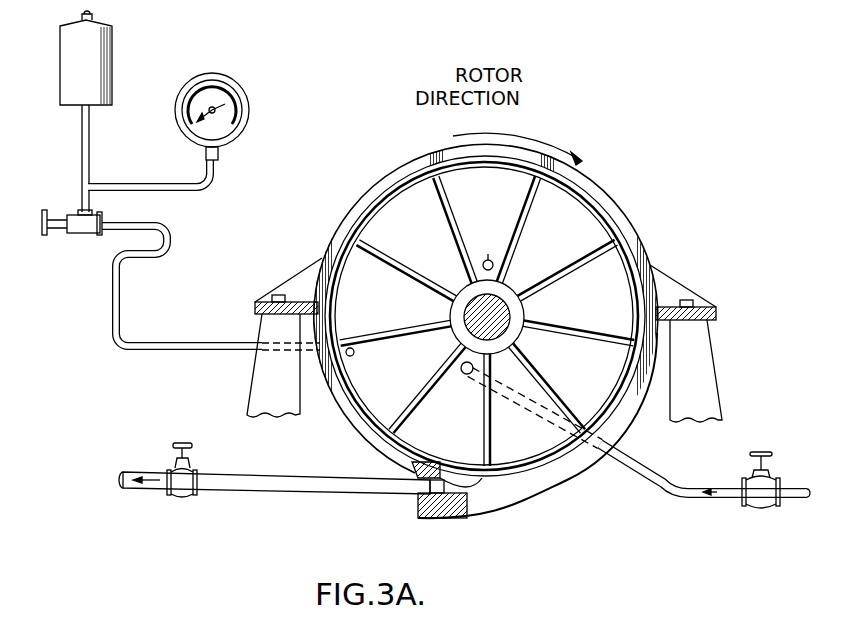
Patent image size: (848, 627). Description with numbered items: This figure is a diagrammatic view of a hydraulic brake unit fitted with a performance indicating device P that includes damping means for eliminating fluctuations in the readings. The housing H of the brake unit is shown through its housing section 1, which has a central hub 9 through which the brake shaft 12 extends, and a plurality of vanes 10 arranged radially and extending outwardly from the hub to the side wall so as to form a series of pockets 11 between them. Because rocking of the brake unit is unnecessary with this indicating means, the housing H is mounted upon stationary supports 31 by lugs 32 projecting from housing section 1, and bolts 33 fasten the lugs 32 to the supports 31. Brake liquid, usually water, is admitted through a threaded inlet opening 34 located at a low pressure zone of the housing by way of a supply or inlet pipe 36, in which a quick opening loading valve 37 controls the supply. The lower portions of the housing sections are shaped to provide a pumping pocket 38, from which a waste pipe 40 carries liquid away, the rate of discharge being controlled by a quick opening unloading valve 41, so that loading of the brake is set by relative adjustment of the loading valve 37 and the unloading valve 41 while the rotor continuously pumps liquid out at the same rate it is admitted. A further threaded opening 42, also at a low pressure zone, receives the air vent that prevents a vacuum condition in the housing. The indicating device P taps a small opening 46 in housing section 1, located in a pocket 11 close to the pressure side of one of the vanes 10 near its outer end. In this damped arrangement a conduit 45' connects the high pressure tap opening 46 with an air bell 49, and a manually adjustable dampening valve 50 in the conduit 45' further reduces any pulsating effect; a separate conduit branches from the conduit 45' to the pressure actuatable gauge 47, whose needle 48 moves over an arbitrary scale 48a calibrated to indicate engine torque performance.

The housing section 1 is at (617, 220).
The central hub 9 is at (465, 288).
The vanes 10 is at (400, 327).
The pockets 11 is at (637, 316).
The brake shaft 12 is at (510, 316).
The stationary supports 31 is at (247, 404).
The lugs 32 is at (256, 303).
The bolts 33 is at (279, 295).
The threaded inlet opening 34 is at (463, 374).
The supply or inlet pipe 36 is at (650, 472).
The quick opening loading valve 37 is at (760, 506).
The pumping pocket 38 is at (463, 490).
The waste pipe 40 is at (290, 485).
The quick opening unloading valve 41 is at (193, 468).
The threaded opening 42 is at (487, 251).
The conduit 45' is at (181, 227).
The small opening 46 is at (353, 356).
The pressure actuatable gauge 47 is at (183, 125).
The needle 48 is at (189, 102).
The arbitrary scale 48a is at (233, 86).
The air bell 49 is at (72, 62).
The manually adjustable dampening valve 50 is at (80, 234).
The performance indicating device P is at (250, 129).
The housing H is at (588, 472).